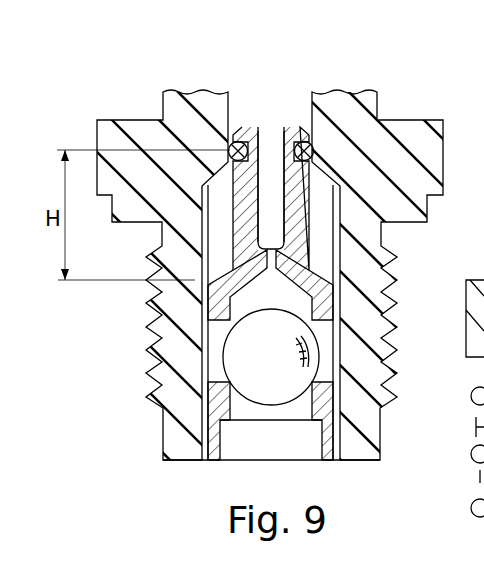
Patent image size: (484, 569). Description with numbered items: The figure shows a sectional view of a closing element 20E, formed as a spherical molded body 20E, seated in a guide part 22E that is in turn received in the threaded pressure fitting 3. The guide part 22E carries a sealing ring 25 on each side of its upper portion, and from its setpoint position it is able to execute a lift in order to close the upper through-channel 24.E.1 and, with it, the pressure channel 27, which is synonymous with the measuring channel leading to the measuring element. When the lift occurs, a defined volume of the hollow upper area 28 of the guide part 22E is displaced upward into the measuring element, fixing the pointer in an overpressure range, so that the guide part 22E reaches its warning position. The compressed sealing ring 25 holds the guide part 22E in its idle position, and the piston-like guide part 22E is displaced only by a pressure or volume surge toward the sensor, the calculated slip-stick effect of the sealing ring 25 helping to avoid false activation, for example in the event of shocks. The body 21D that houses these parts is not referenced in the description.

The pressure fitting 3 is at (187, 472).
The closing element 20E is at (271, 360).
The threaded housing body 21D is at (331, 236).
The guide part 22E is at (326, 402).
The upper through-channel 24.E.1 is at (229, 268).
The sealing ring 25 is at (313, 150).
The pressure channel 27 is at (266, 107).
The hollow upper area 28 is at (231, 221).